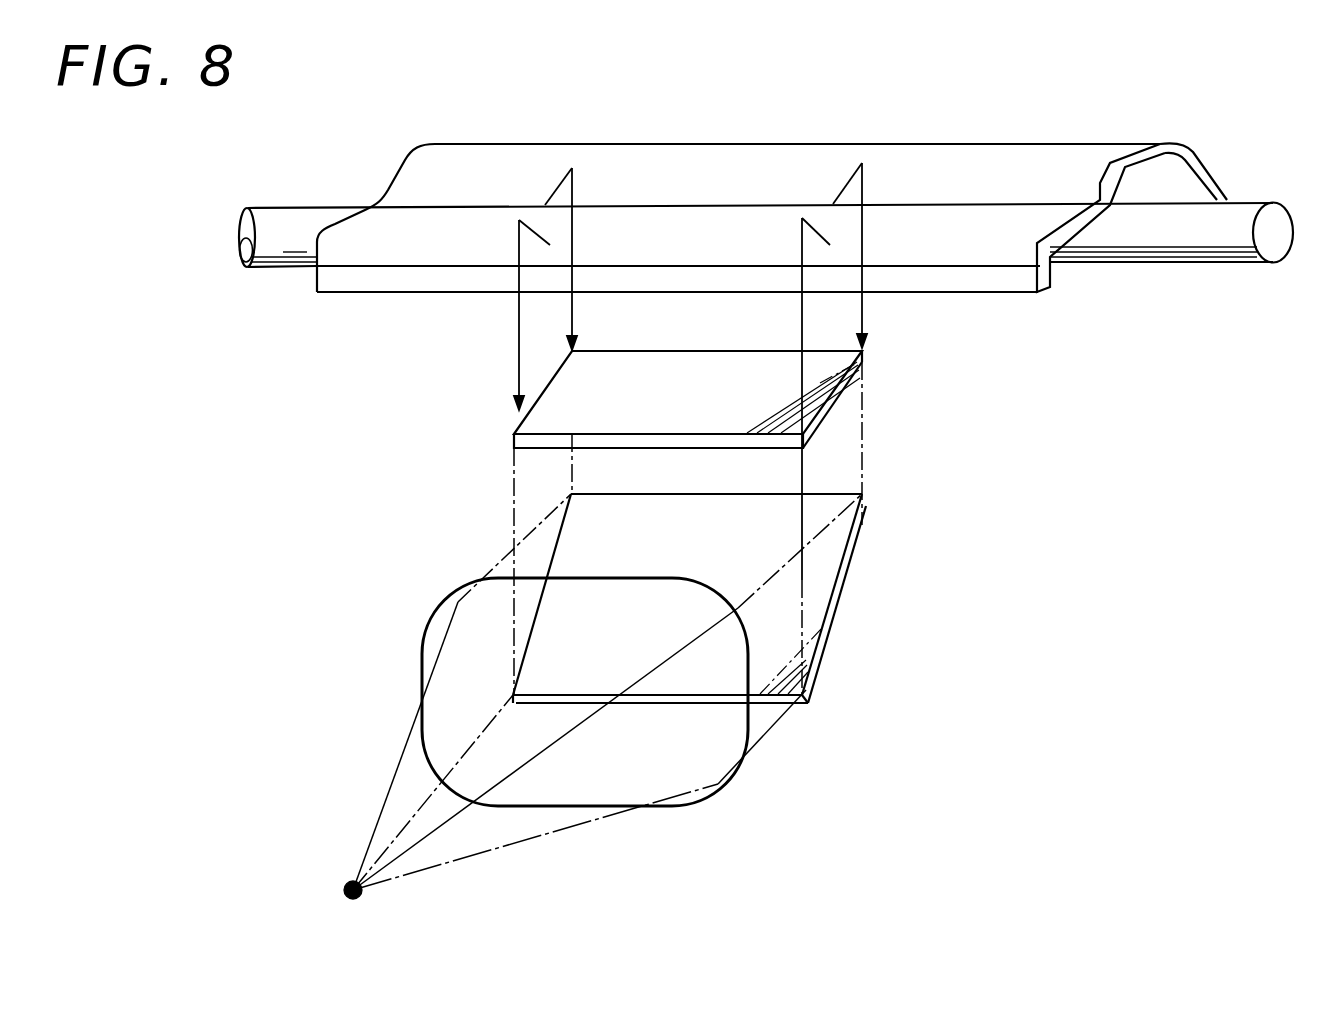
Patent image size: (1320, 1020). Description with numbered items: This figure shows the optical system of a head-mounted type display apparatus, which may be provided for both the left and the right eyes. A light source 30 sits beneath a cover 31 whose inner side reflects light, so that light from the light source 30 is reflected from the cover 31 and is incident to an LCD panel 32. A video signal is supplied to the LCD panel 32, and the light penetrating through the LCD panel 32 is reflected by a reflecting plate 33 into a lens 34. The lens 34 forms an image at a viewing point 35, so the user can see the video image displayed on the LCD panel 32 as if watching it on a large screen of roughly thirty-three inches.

The light source 30 is at (1152, 263).
The cover 31 is at (345, 297).
The LCD panel 32 is at (862, 360).
The reflecting plate 33 is at (833, 543).
The lens 34 is at (710, 772).
The viewing point 35 is at (346, 883).